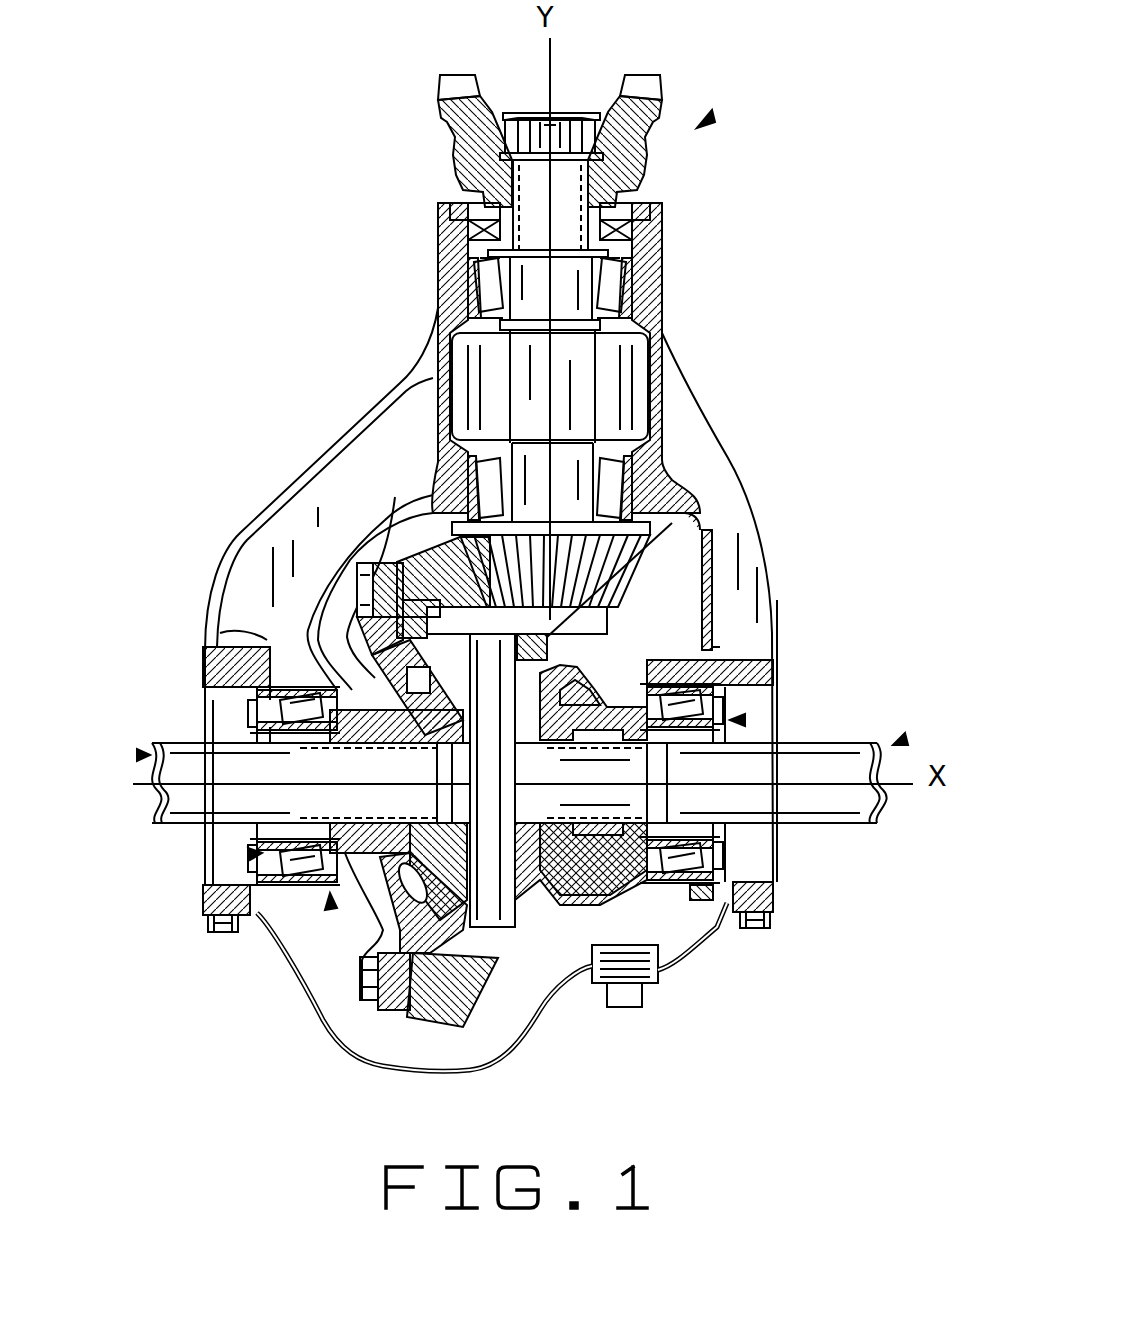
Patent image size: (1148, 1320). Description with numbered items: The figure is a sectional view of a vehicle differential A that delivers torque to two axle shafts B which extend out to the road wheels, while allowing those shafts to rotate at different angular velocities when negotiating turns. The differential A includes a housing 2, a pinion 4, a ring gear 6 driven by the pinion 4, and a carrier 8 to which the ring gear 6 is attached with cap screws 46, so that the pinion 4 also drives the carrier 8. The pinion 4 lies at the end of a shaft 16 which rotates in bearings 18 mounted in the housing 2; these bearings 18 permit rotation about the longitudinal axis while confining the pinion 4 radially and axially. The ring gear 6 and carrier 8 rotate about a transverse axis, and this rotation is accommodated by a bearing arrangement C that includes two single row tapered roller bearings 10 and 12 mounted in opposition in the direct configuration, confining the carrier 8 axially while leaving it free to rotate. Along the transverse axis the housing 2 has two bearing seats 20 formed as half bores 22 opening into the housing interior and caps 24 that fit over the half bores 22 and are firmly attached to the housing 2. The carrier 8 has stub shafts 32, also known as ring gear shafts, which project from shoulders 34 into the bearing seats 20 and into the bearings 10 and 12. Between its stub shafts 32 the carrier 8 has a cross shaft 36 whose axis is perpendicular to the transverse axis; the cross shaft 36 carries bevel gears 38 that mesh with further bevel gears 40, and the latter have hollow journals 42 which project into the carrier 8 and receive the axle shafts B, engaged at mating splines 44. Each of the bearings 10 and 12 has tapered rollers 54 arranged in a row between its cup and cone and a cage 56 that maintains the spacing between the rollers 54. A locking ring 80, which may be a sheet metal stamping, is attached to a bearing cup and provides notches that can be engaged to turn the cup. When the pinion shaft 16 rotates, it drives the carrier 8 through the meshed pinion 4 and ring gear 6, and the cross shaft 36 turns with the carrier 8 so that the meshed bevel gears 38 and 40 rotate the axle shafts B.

The housing 2 is at (677, 493).
The pinion 4 is at (640, 540).
The ring gear 6 is at (417, 547).
The carrier 8 is at (577, 925).
The tapered roller bearing 10 is at (252, 855).
The tapered roller bearing 12 is at (780, 897).
The shaft 16 is at (577, 353).
The bearings 18 is at (440, 347).
The bearing seats 20 is at (265, 690).
The half bores 22 is at (258, 700).
The caps 24 is at (295, 888).
The stub shafts 32 is at (250, 838).
The shoulders 34 is at (418, 960).
The cross shaft 36 is at (490, 913).
The bevel gears 38 is at (550, 647).
The bevel gears 40 is at (393, 523).
The journals 42 is at (340, 620).
The splines 44 is at (320, 640).
The cap screws 46 is at (340, 570).
The tapered rollers 54 is at (683, 890).
The cage 56 is at (340, 860).
The locking ring 80 is at (255, 727).
The differential A is at (705, 122).
The axle shafts B is at (140, 755).
The bearing arrangement C is at (745, 720).